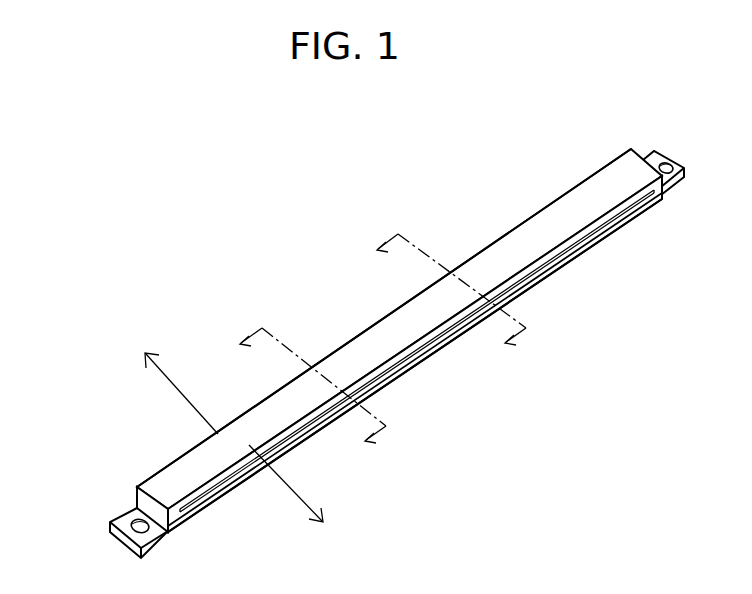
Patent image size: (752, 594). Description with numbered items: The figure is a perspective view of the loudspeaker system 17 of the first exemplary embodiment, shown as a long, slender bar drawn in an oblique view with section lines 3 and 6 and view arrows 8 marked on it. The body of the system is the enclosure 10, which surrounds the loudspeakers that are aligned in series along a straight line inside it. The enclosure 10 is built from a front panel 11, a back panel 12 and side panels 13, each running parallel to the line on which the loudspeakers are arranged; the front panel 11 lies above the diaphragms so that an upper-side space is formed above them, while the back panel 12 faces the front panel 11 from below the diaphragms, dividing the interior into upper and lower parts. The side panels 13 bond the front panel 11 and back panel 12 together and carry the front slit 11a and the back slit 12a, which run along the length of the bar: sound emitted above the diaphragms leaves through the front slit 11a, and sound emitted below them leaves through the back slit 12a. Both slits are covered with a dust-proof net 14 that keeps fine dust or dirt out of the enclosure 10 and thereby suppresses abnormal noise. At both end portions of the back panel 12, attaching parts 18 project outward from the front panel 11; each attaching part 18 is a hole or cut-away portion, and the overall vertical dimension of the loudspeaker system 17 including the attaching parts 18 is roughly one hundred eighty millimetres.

The enclosure 10 is at (409, 330).
The front panel 11 is at (565, 210).
The front slit 11a is at (497, 239).
The back panel 12 is at (542, 281).
The back slit 12a is at (400, 376).
The side panel 13 is at (614, 211).
The dust-proof net 14 is at (440, 344).
The loudspeaker system 17 is at (347, 303).
The attaching part 18 is at (133, 521).
The section line 3- 3 is at (443, 299).
The section line 6- 6 is at (298, 394).
The view direction arrows 8 is at (180, 534).